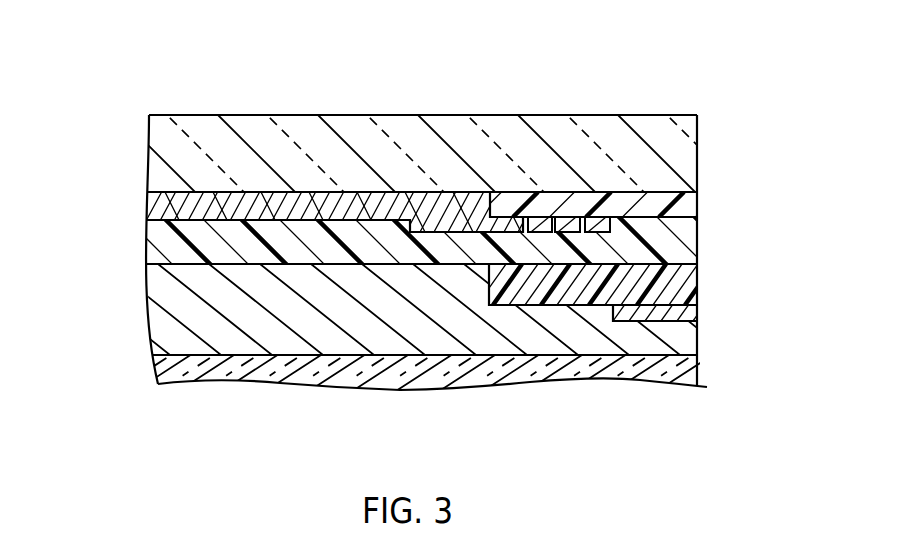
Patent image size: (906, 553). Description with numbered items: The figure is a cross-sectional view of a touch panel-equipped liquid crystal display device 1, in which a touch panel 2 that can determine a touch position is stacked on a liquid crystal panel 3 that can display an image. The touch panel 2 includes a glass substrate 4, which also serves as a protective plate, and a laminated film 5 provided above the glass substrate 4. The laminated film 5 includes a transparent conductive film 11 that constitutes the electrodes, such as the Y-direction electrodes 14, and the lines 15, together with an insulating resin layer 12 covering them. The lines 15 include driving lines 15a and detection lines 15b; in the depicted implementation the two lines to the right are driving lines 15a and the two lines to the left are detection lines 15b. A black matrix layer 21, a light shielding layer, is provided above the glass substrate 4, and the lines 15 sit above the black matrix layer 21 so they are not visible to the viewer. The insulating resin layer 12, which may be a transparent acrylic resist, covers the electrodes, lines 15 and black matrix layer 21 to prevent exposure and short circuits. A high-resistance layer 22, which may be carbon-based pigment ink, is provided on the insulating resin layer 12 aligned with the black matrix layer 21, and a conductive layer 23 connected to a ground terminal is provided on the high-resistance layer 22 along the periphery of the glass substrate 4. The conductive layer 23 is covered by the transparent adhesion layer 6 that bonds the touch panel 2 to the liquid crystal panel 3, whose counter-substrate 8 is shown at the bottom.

The touch panel-equipped liquid crystal display device 1 is at (715, 88).
The touch panel 2 is at (188, 108).
The liquid crystal panel 3 is at (563, 395).
The glass substrate 4 is at (309, 125).
The laminated film 5 is at (70, 182).
The transparent adhesion layer 6 is at (165, 313).
The counter-substrate 8 is at (410, 381).
The transparent conductive film 11 is at (143, 200).
The insulating resin layer 12 is at (160, 240).
The Y-direction electrodes 14 is at (373, 198).
The lines 15 is at (535, 58).
The driving lines 15a is at (602, 216).
The detection lines 15b is at (545, 215).
The black matrix layer 21 is at (688, 205).
The high-resistance layer 22 is at (683, 283).
The conductive layer 23 is at (693, 317).